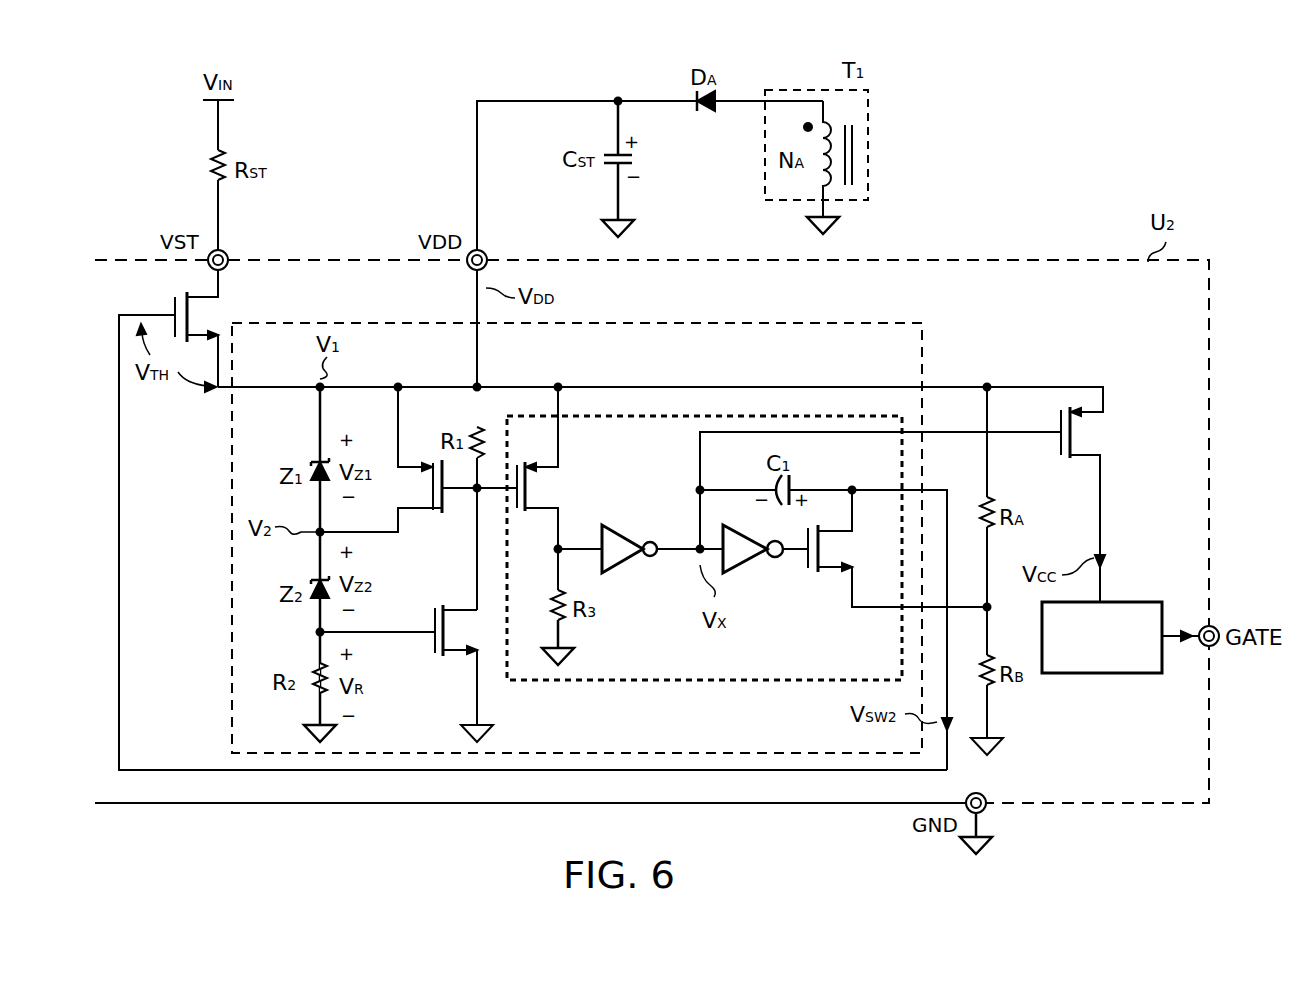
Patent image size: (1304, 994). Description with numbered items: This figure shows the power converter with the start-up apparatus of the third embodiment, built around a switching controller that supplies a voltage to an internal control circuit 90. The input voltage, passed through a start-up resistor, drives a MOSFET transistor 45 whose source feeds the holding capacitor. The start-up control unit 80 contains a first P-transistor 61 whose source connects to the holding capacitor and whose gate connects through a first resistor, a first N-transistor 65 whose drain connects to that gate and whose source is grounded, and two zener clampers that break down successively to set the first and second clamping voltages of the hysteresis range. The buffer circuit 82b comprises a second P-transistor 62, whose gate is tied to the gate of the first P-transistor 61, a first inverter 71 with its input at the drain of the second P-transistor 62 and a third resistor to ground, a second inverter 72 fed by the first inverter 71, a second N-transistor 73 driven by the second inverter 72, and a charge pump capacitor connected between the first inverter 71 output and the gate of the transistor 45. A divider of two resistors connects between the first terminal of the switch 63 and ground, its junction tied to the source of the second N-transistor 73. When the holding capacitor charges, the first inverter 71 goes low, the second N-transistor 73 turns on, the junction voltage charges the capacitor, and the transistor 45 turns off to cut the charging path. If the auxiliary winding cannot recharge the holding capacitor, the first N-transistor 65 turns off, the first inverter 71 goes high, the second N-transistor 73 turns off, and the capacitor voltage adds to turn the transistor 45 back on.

The transistor 45 is at (218, 317).
The first P-transistor 61 is at (437, 518).
The second P-transistor 62 is at (560, 484).
The switch 63 is at (1098, 437).
The first N-transistor 65 is at (442, 660).
The first inverter 71 is at (625, 565).
The second inverter 72 is at (745, 572).
The second N-transistor 73 is at (830, 580).
The start-up control unit 80 is at (924, 343).
The buffer circuit 82b is at (722, 683).
The control circuit 90 is at (1138, 600).